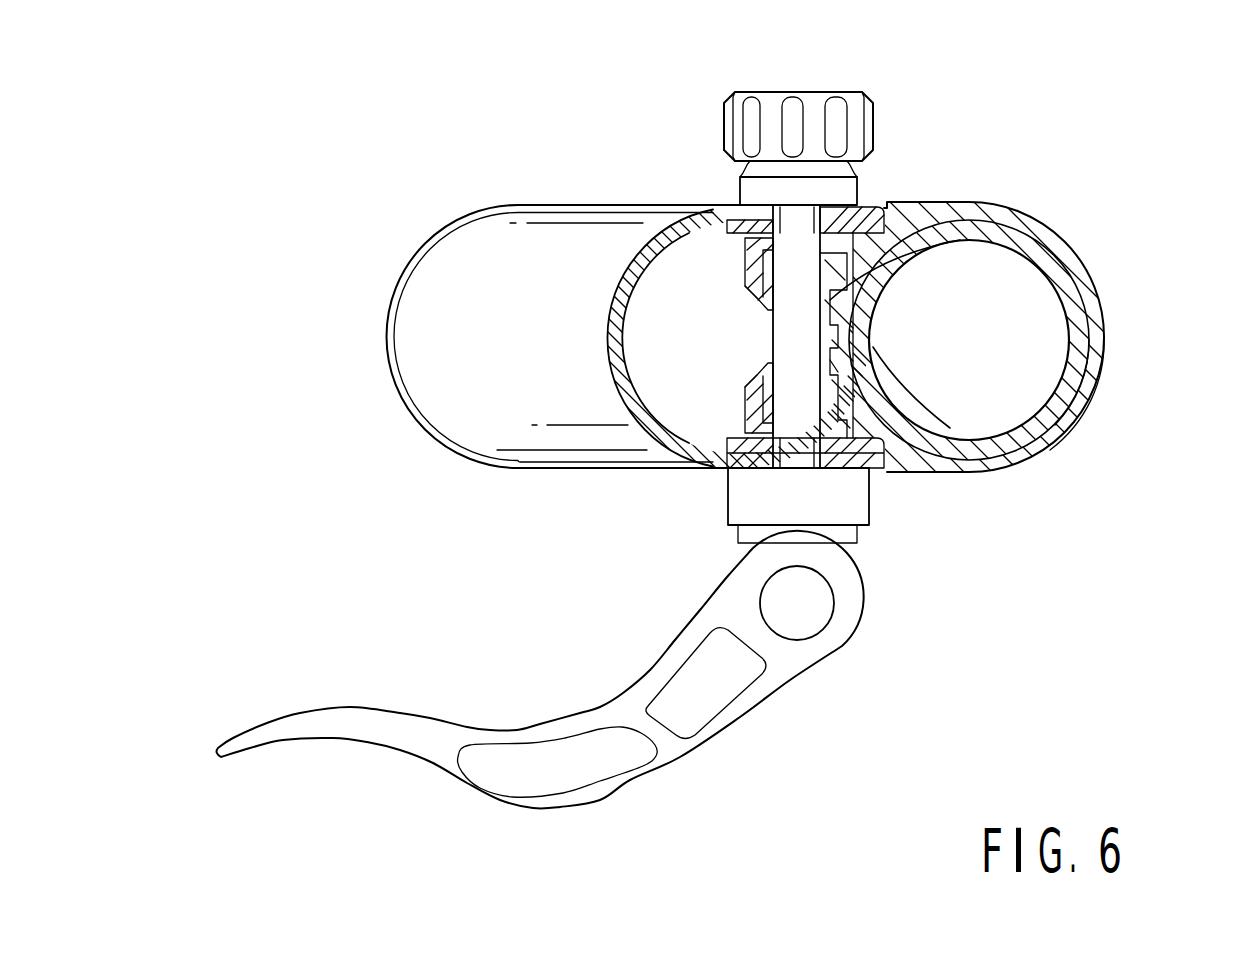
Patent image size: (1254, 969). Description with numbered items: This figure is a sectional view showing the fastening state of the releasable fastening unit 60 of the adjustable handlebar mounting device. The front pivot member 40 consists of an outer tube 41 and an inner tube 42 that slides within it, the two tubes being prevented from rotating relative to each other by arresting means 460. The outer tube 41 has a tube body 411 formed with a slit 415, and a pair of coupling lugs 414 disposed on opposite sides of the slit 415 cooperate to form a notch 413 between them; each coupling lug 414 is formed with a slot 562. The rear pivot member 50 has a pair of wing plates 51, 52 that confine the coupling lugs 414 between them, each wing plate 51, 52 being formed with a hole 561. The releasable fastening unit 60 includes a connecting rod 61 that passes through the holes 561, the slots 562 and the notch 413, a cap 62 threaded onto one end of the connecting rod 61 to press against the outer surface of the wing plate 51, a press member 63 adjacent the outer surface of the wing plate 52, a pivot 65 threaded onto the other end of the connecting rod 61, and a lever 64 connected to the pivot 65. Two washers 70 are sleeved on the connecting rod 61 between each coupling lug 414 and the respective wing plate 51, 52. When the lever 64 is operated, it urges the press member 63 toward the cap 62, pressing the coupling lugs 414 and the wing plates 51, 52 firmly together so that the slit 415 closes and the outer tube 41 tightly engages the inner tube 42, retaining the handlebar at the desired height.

The front pivot member 40 is at (1090, 270).
The outer tube 41 is at (1103, 313).
The inner tube 42 is at (1088, 343).
The rear pivot member 50 is at (481, 207).
The wing plate 51 is at (833, 185).
The wing plate 52 is at (870, 474).
The releasable fastening unit 60 is at (540, 703).
The connecting rod 61 is at (797, 272).
The cap 62 is at (873, 118).
The press member 63 is at (857, 528).
The lever 64 is at (738, 713).
The pivot 65 is at (818, 622).
The washer 70 is at (857, 216).
The tube body 411 is at (1070, 417).
The notch 413 is at (840, 356).
The coupling lug 414 is at (753, 377).
The slit 415 is at (838, 368).
The arresting means 460 is at (848, 305).
The hole 561 is at (740, 206).
The slot 562 is at (746, 245).